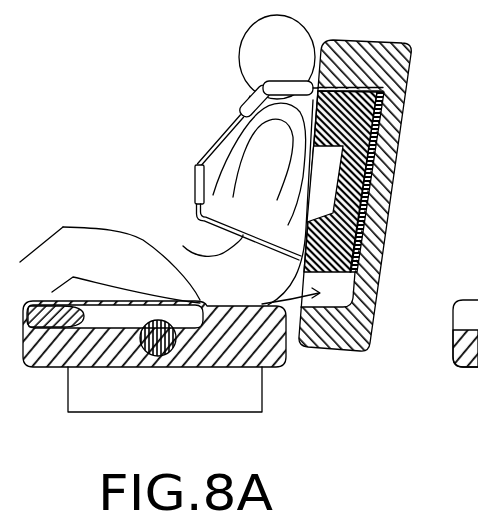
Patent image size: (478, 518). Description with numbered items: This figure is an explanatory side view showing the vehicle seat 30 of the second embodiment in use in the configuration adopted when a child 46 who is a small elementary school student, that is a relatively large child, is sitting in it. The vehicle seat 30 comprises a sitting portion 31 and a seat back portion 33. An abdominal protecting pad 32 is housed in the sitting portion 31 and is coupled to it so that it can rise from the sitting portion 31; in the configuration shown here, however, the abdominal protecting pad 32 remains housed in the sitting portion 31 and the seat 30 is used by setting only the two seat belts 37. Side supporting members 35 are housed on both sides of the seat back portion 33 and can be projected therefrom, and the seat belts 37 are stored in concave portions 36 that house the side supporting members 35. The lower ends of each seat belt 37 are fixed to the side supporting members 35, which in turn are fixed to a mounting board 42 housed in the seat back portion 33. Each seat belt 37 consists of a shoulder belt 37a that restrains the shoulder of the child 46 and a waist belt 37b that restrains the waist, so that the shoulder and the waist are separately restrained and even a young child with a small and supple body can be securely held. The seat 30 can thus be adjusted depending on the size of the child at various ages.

The vehicle seat 30 is at (292, 382).
The sitting portion 31 is at (207, 242).
The abdominal protecting pad 32 is at (50, 320).
The seat back portion 33 is at (313, 52).
The side supporting member 35 is at (357, 143).
The concave portion 36 is at (255, 322).
The seat belt 37 is at (197, 157).
The shoulder belt 37a is at (247, 110).
The waist belt 37b is at (183, 246).
The mounting board 42 is at (362, 255).
The child 46 is at (243, 44).